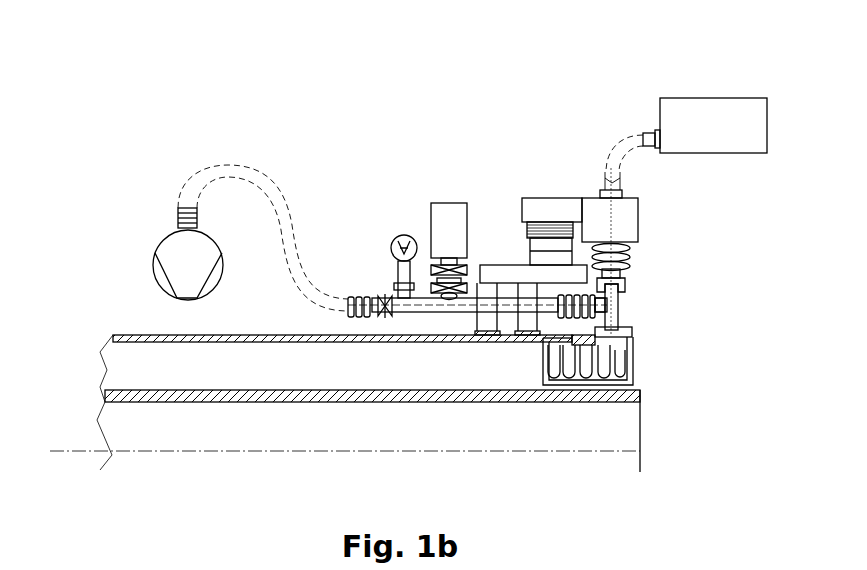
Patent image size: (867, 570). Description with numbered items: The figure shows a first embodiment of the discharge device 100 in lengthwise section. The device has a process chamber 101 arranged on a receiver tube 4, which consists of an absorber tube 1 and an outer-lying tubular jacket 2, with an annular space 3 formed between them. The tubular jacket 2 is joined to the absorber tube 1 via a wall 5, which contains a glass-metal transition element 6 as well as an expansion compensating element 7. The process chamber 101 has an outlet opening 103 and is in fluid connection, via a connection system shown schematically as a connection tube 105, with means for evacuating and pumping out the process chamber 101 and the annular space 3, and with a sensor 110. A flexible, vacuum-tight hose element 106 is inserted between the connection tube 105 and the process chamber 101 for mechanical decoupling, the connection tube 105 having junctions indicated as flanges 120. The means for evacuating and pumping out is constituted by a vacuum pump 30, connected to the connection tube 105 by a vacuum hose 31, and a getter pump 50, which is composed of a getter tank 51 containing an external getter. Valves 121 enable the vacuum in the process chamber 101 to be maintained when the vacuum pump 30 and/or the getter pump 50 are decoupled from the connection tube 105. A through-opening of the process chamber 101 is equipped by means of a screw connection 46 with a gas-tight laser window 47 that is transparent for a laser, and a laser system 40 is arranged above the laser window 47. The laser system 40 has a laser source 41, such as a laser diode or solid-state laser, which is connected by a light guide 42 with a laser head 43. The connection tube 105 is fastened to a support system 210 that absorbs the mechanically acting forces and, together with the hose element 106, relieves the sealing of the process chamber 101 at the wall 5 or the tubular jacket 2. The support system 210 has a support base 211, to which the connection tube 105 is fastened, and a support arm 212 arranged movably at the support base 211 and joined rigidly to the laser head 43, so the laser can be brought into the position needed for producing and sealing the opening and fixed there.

The absorber tube 1 is at (105, 397).
The tubular jacket 2 is at (113, 337).
The annular space 3 is at (127, 372).
The receiver tube 4 is at (75, 420).
The wall 5 is at (617, 369).
The glass-metal transition element 6 is at (578, 340).
The expansion compensating element 7 is at (600, 360).
The vacuum pump 30 is at (160, 246).
The vacuum hose 31 is at (205, 178).
The laser system 40 is at (749, 92).
The laser source 41 is at (713, 112).
The light guide 42 is at (622, 150).
The laser head 43 is at (623, 217).
The screw connection 46 is at (625, 285).
The laser window 47 is at (615, 277).
The getter pump 50 is at (414, 169).
The getter tank 51 is at (452, 217).
The discharge device 100 is at (270, 82).
The process chamber 101 is at (622, 299).
The outlet opening 103 is at (602, 308).
The connection tube 105 is at (413, 313).
The hose element 106 is at (560, 318).
The sensor 110 is at (400, 238).
The flanges 120 is at (380, 305).
The valves 121 is at (462, 290).
The support system 210 is at (518, 185).
The support base 211 is at (517, 243).
The support arm 212 is at (547, 202).